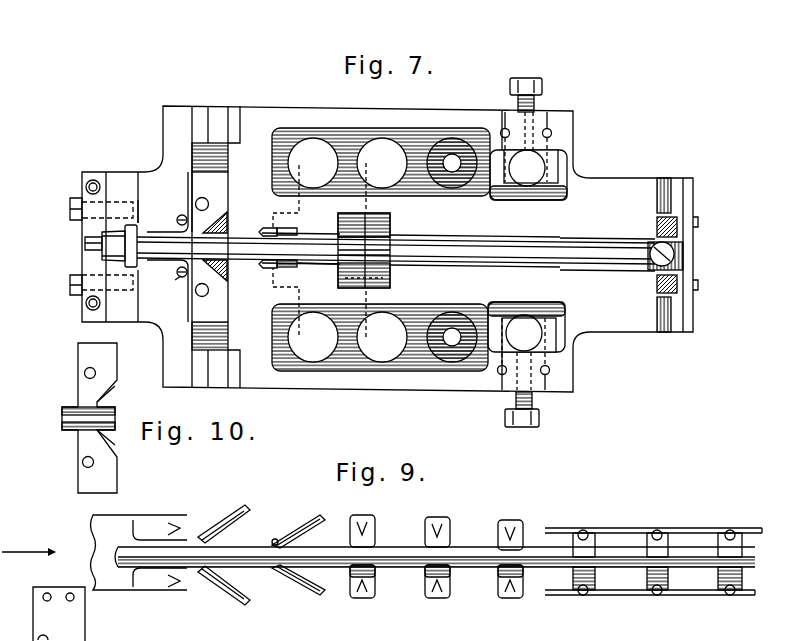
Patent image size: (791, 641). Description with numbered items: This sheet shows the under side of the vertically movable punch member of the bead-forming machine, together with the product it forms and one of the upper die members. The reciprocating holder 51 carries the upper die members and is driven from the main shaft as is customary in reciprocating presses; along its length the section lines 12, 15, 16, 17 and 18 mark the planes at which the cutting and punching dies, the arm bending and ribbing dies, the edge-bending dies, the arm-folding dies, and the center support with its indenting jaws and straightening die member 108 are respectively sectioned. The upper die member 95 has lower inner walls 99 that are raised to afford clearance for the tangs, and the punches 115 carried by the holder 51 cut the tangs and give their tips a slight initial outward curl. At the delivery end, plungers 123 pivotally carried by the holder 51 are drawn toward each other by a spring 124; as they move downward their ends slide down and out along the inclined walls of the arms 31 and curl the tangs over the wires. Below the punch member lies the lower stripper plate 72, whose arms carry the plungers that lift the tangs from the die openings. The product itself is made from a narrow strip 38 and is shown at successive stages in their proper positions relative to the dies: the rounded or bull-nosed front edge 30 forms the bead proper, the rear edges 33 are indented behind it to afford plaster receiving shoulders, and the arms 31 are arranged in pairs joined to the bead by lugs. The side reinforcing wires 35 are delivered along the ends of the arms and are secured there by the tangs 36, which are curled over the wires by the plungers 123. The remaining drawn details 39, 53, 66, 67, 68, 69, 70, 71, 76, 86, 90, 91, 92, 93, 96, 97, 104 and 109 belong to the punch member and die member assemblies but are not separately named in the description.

In FIG. 7, the section line 12— 12 is at (144, 368).
In FIG. 7, the section line 15— 15 is at (216, 388).
In FIG. 7, the section line 16— 16 is at (313, 250).
In FIG. 9, the section line 16— 16 is at (264, 628).
In FIG. 7, the section line 17— 17 is at (382, 250).
In FIG. 9, the section line 17— 17 is at (363, 625).
In FIG. 7, the section line 18— 18 is at (525, 425).
In FIG. 9, the section line 18— 18 is at (528, 640).
In FIG. 9, the front edge 30 is at (760, 560).
In FIG. 9, the arms 31 is at (168, 525).
In FIG. 9, the rear edges 33 is at (228, 547).
In FIG. 9, the side reinforcing wires 35 is at (700, 596).
In FIG. 9, the tangs 36 is at (175, 583).
In FIG. 9, the strip 38 is at (105, 532).
In FIG. 9, the groove 39 is at (132, 540).
In FIG. 7, the holder 51 is at (296, 108).
In FIG. 7, the screw 53 is at (86, 187).
In FIG. 7, the lever 66 is at (202, 184).
In FIG. 10, the lever 66 is at (82, 383).
In FIG. 7, the screw 67 is at (153, 262).
In FIG. 7, the shaft nut 68 is at (102, 241).
In FIG. 7, the pin hole 69 is at (194, 204).
In FIG. 10, the pin hole 69 is at (74, 393).
In FIG. 7, the screw 70 is at (156, 228).
In FIG. 7, the bracket 71 is at (138, 205).
In FIG. 9, the lower stripper plate 72 is at (42, 615).
In FIG. 7, the hole 76 is at (200, 292).
In FIG. 10, the hole 76 is at (82, 462).
In FIG. 7, the cam surface 86 is at (213, 230).
In FIG. 10, the cam surface 86 is at (105, 442).
In FIG. 7, the rod 90 is at (320, 263).
In FIG. 7, the wedge 91 is at (251, 243).
In FIG. 7, the pin 92 is at (270, 230).
In FIG. 7, the pin 93 is at (273, 266).
In FIG. 7, the upper die member 95 is at (391, 220).
In FIG. 7, the sleeve 96 is at (385, 247).
In FIG. 7, the shaft 97 is at (385, 258).
In FIG. 7, the lower inner walls 99 is at (390, 283).
In FIG. 7, the ball 104 is at (532, 173).
In FIG. 7, the die member 108 is at (607, 240).
In FIG. 7, the shaft end 109 is at (580, 254).
In FIG. 7, the punches 115 is at (182, 277).
In FIG. 7, the plungers 123 is at (667, 226).
In FIG. 7, the spring 124 is at (675, 253).